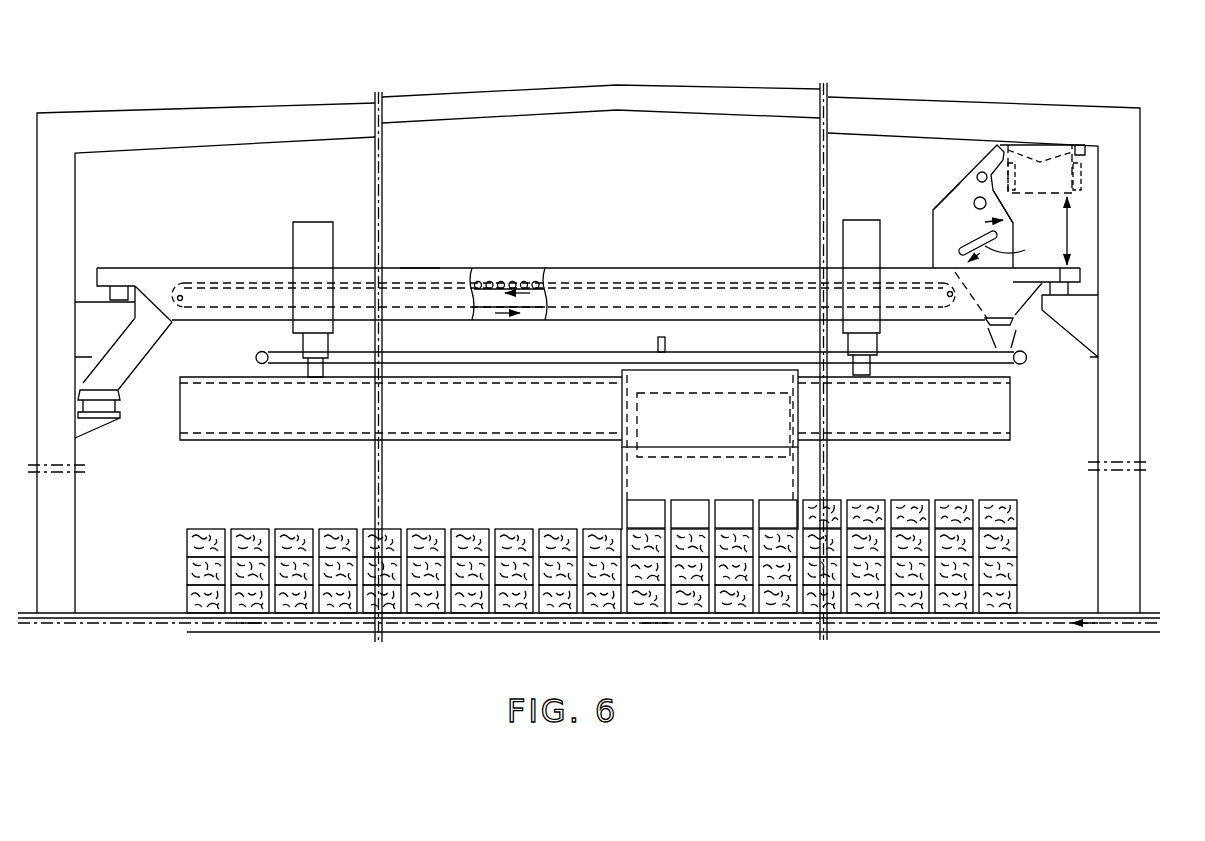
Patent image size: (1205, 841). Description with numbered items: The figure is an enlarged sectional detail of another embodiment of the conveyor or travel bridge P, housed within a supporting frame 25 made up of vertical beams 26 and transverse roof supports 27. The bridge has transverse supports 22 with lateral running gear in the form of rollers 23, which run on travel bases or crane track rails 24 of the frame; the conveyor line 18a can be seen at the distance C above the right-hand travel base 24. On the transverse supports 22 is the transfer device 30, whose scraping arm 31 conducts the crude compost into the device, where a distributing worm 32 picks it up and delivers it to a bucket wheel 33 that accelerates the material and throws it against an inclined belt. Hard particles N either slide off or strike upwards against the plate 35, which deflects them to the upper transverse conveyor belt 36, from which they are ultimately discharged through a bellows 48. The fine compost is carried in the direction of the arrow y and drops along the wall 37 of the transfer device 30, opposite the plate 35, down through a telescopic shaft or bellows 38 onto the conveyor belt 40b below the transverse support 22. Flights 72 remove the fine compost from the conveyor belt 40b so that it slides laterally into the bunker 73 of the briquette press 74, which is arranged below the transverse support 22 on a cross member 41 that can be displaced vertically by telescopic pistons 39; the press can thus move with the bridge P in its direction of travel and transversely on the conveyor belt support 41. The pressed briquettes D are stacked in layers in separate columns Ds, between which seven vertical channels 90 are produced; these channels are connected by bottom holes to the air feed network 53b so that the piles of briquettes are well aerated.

The vertical beams 26 is at (73, 133).
The roof supports 27 is at (767, 93).
The supporting frame 25 is at (1075, 130).
The scraping arm 31 is at (1020, 148).
The conveyor line 18a is at (1085, 152).
The distributing worm 32 is at (976, 172).
The bucket wheel 33 is at (972, 196).
The plate 35 is at (935, 200).
The transfer device 30 is at (952, 230).
The wall 37 is at (1007, 213).
The direction arrow y is at (991, 240).
The distance C is at (1067, 231).
The telescopic pistons 39 is at (862, 228).
The rollers 23 is at (118, 296).
The transverse supports 22 is at (657, 275).
The travel bridge P is at (422, 264).
The hard particles N is at (490, 283).
The transverse conveyor belt 36 is at (488, 310).
The flights 72 is at (667, 346).
The bunker 73 is at (790, 386).
The conveyor belt 40b is at (545, 357).
The cross member 41 is at (1000, 405).
The briquette press 74 is at (622, 482).
The bellows 48 is at (150, 345).
The travel base 24 is at (1085, 330).
The bellows 38 is at (1012, 321).
The briquettes D is at (602, 581).
The vertical channels 90 is at (453, 530).
The air feed network 53b is at (480, 620).
The columns Ds is at (560, 598).